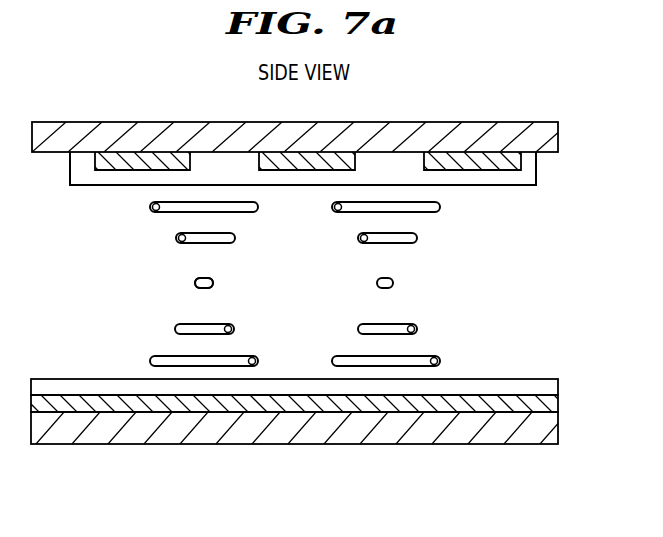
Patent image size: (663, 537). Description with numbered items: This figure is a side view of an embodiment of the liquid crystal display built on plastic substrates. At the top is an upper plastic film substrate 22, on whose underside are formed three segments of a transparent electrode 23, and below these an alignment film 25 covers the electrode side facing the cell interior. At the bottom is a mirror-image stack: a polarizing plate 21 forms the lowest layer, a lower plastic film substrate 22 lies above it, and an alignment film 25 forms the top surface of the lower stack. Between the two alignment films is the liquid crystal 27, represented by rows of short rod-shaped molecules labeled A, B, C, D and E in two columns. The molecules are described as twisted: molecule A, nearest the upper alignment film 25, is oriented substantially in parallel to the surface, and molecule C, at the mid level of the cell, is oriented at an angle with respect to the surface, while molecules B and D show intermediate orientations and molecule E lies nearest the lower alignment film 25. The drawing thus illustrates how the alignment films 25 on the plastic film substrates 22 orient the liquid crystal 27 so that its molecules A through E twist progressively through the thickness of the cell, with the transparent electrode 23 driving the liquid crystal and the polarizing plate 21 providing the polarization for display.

The polarizing plate 21 is at (558, 428).
The plastic film substrate 22 is at (558, 138).
The transparent electrode 23 is at (516, 160).
The alignment film 25 is at (516, 185).
The liquid crystal 27 is at (162, 283).
The liquid crystal molecule A is at (440, 207).
The liquid crystal molecule B is at (417, 238).
The liquid crystal molecule C is at (393, 283).
The liquid crystal molecule D is at (417, 329).
The liquid crystal molecule E is at (440, 361).